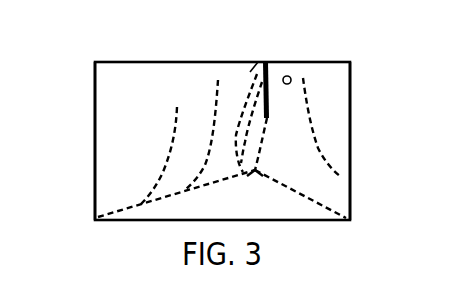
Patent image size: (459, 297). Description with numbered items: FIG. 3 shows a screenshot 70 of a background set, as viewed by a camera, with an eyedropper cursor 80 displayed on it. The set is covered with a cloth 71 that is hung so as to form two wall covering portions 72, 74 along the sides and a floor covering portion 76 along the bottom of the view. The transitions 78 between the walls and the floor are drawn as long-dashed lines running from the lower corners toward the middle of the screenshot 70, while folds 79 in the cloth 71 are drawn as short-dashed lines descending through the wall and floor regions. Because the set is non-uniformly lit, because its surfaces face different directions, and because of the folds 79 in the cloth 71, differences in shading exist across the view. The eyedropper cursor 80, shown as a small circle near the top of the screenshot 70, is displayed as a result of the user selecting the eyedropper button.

The screenshot 70 is at (160, 62).
The cloth 71 is at (158, 123).
The wall covering portion 72 is at (103, 123).
The wall covering portion 74 is at (340, 120).
The floor covering portion 76 is at (160, 210).
The transitions 78 is at (322, 205).
The folds 79 is at (320, 149).
The eyedropper cursor 80 is at (290, 76).